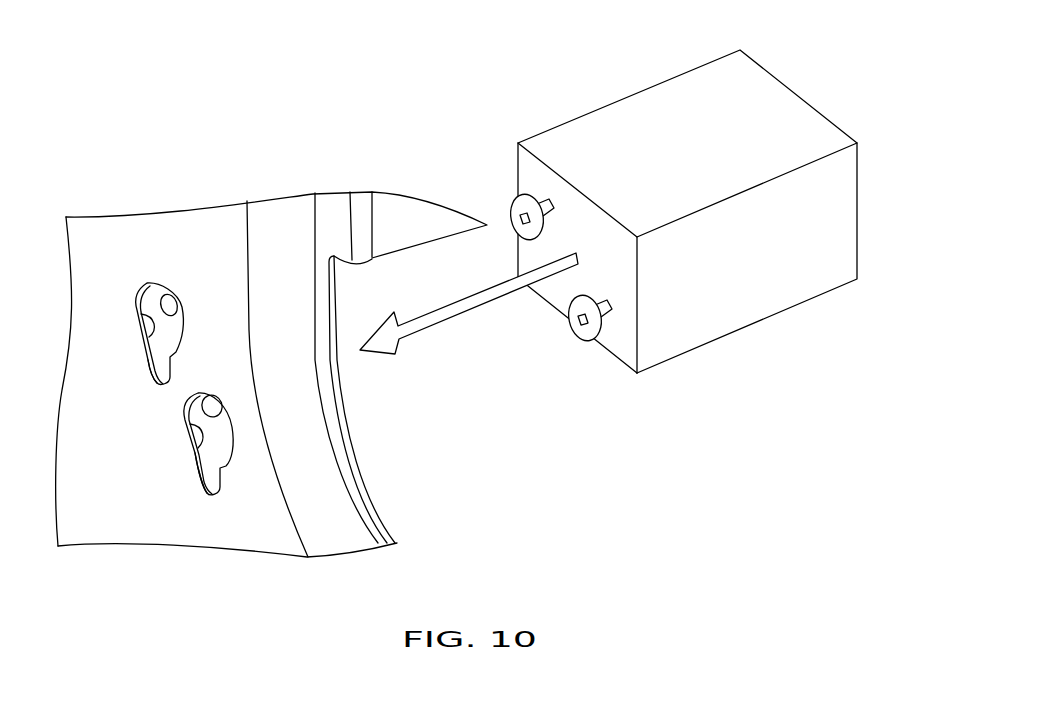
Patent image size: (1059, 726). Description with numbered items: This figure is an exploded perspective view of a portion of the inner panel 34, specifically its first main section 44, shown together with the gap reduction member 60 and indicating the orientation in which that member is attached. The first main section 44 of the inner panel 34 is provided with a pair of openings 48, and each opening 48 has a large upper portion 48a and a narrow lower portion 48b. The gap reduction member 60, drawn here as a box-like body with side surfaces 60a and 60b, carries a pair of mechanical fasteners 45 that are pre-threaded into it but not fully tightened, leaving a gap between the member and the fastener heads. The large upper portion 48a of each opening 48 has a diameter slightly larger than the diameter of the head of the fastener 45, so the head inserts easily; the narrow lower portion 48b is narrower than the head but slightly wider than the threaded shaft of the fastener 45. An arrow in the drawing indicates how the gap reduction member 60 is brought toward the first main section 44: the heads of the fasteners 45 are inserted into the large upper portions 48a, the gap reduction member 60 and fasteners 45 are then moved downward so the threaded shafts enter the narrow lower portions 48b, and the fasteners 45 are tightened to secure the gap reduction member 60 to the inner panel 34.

The inner panel 34 is at (105, 215).
The first main section 44 is at (189, 247).
The opening 48 is at (147, 335).
The large upper portion 48a is at (164, 298).
The narrow lower portion 48b is at (167, 370).
The gap reduction member 60 is at (670, 108).
The side wall of housing 60a is at (557, 288).
The side wall of housing 60b is at (860, 190).
The mechanical fastener 45 is at (513, 212).